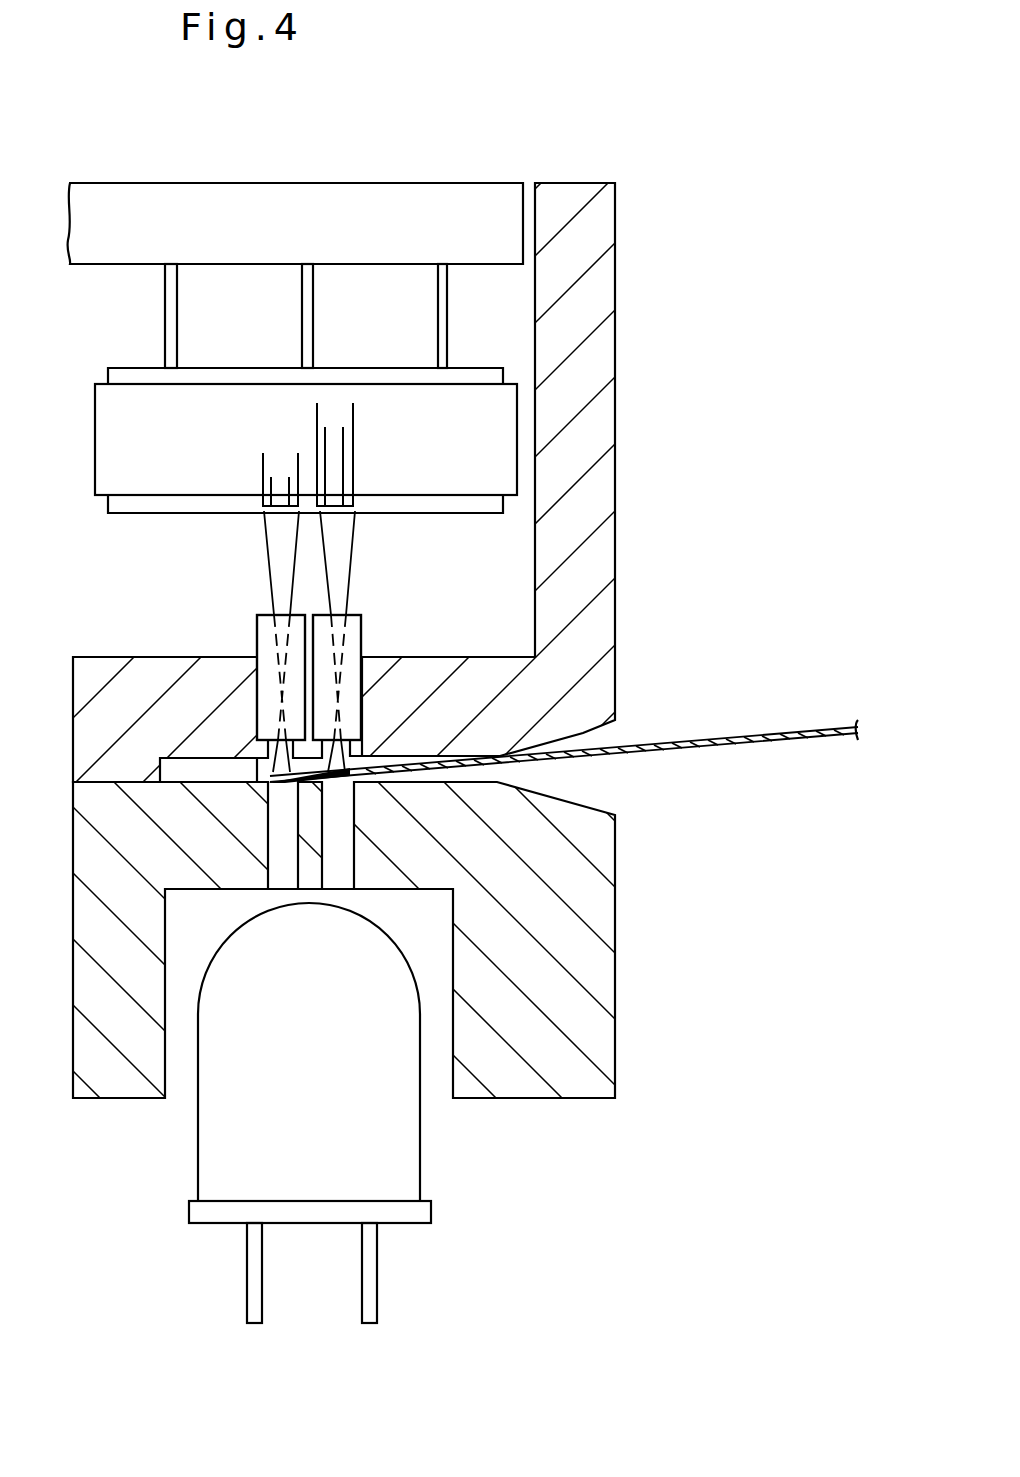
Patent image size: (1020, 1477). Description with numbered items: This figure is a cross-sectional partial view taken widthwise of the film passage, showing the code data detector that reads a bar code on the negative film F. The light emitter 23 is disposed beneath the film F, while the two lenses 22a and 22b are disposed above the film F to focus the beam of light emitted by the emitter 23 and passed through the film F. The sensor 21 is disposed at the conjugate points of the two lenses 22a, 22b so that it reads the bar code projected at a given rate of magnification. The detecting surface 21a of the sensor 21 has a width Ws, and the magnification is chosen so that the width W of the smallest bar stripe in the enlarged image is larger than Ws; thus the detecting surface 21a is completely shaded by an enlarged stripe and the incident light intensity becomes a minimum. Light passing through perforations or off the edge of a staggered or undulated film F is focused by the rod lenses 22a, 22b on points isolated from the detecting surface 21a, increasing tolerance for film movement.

The sensor 21 is at (107, 430).
The detecting surface 21a is at (280, 500).
The lens 22a is at (362, 622).
The lens 22b is at (257, 632).
The light emitter 23 is at (207, 1148).
The negative film F is at (753, 727).
The width of the smallest stripe W is at (395, 410).
The width of the detecting surface Ws is at (435, 436).